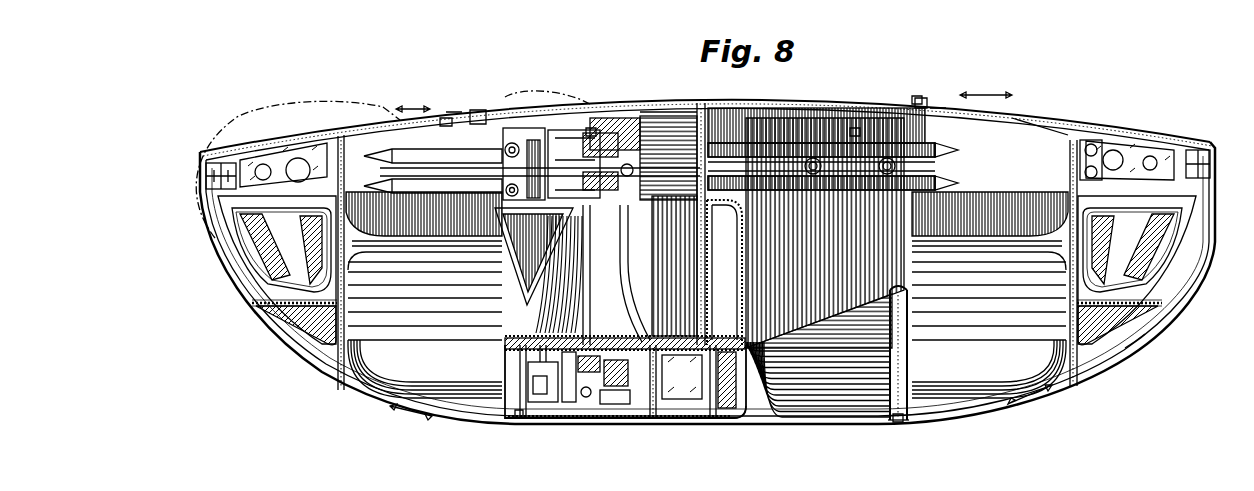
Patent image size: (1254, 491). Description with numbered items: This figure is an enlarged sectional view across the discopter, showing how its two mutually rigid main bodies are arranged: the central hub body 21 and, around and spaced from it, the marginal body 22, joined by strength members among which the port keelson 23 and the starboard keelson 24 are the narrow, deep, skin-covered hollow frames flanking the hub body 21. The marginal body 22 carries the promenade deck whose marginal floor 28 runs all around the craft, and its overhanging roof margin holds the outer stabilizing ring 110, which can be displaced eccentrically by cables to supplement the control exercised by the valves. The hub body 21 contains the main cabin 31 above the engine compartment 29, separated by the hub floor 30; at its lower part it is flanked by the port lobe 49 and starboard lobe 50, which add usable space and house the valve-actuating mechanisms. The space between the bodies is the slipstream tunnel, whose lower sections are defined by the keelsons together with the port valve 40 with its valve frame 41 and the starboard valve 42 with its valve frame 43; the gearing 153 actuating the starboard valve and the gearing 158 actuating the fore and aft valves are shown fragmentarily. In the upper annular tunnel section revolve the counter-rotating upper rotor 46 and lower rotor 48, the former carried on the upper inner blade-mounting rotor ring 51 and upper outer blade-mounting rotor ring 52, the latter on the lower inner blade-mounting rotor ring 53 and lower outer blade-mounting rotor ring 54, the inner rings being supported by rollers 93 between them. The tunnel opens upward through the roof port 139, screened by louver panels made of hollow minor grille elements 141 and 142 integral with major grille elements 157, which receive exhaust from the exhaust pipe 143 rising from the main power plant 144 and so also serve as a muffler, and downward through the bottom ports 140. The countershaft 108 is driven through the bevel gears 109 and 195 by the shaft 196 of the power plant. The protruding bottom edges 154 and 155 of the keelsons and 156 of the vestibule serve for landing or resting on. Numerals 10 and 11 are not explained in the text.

The hull 10 is at (505, 97).
The outline 11 is at (298, 104).
The hub body 21 is at (823, 114).
The marginal body 22 is at (256, 142).
The port keelson 23 is at (907, 414).
The starboard keelson 24 is at (523, 340).
The marginal floor 28 is at (1158, 300).
The engine compartment 29 is at (650, 395).
The hub floor 30 is at (690, 376).
The main cabin 31 is at (634, 117).
The port valve 40 is at (993, 318).
The valve frame 41 is at (1055, 374).
The starboard valve 42 is at (452, 322).
The valve frame 43 is at (370, 245).
The upper rotor 46 is at (1015, 175).
The lower rotor 48 is at (1034, 130).
The port lobe 49 is at (843, 362).
The starboard lobe 50 is at (569, 405).
The upper inner blade-mounting rotor ring 51 is at (762, 134).
The upper outer blade-mounting rotor ring 52 is at (1086, 160).
The lower inner blade-mounting rotor ring 53 is at (786, 130).
The lower outer blade-mounting rotor ring 54 is at (1118, 140).
The rollers 93 is at (591, 128).
The countershaft 108 is at (587, 376).
The bevel gear 109 is at (596, 372).
The outer stabilizing ring 110 is at (197, 165).
The roof port 139 is at (412, 108).
The bottom ports 140 is at (398, 413).
The minor grille element 141 is at (461, 108).
The minor grille element 142 is at (478, 112).
The exhaust pipe 143 is at (650, 114).
The main power plant 144 is at (708, 400).
The gearing 153 is at (540, 425).
The protruding bottom edge 154 is at (530, 424).
The protruding bottom edge 155 is at (903, 421).
The protruding bottom edge 156 is at (712, 372).
The major grille element 157 is at (447, 120).
The gearing 158 is at (520, 442).
The bevel gear 195 is at (602, 392).
The shaft 196 is at (641, 392).